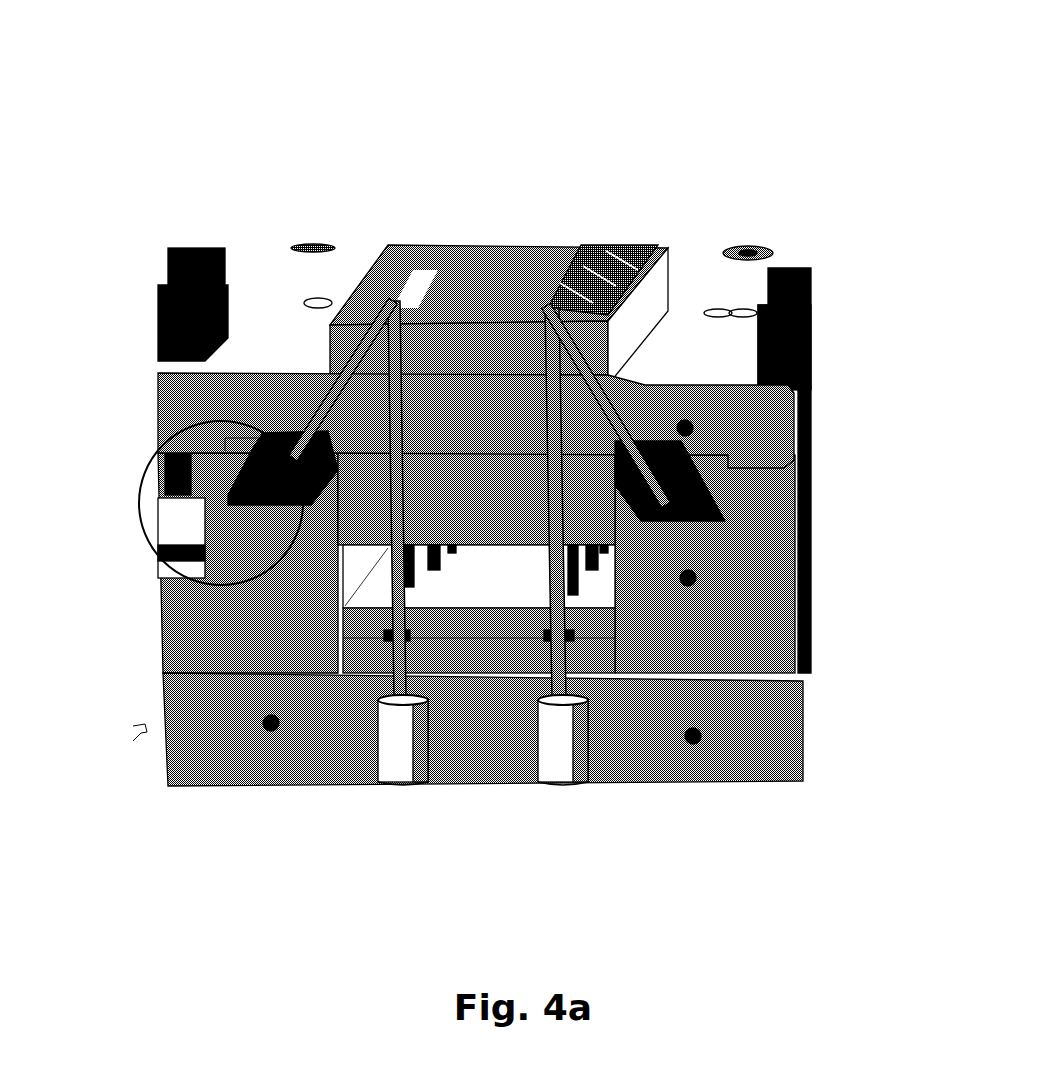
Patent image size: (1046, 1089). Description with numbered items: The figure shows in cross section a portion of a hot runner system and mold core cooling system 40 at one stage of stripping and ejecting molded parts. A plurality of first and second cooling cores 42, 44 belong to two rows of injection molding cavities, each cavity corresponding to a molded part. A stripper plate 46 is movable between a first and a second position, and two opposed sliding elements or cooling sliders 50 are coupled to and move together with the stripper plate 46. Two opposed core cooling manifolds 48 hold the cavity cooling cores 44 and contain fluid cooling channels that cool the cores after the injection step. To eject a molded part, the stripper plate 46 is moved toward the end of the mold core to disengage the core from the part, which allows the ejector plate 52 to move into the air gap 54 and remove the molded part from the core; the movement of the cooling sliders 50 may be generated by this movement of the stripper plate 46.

The mold core cooling system 40 is at (700, 158).
The first cooling cores 42 is at (385, 360).
The second cooling cores 44 is at (343, 367).
The stripper plate 46 is at (178, 402).
The core cooling manifolds 48 is at (287, 483).
The cooling sliders 50 is at (203, 477).
The ejector plate 52 is at (420, 645).
The air gap 54 is at (508, 573).